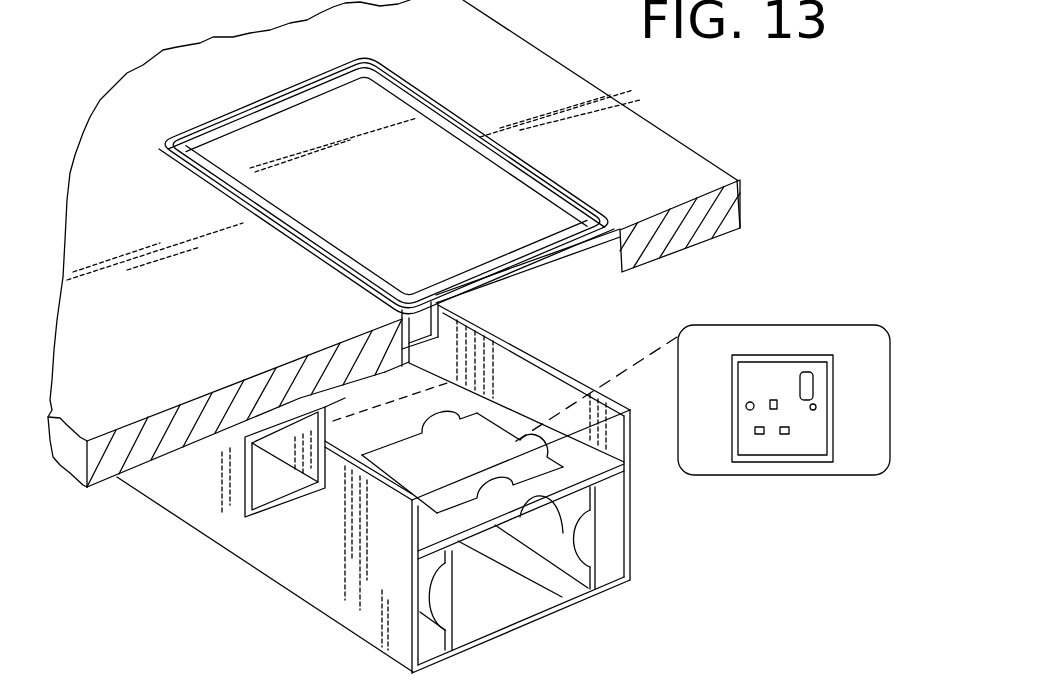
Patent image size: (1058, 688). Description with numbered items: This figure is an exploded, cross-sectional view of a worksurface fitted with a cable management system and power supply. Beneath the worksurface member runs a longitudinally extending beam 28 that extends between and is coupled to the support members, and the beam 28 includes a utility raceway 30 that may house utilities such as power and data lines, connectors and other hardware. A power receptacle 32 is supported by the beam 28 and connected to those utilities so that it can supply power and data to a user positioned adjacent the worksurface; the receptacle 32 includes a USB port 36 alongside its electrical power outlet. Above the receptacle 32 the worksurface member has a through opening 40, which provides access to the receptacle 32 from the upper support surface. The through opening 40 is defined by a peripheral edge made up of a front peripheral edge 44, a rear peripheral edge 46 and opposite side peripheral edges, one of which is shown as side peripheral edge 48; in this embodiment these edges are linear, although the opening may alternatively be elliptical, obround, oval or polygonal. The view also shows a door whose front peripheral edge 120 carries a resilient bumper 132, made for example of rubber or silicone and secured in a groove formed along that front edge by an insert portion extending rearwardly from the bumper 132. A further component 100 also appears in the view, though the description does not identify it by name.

The beam 28 is at (266, 435).
The utility raceway 30 is at (475, 476).
The power receptacle 32 is at (817, 402).
The USB port 36 is at (807, 372).
The through opening 40 is at (504, 278).
The front peripheral edge 44 is at (422, 327).
The rear peripheral edge 46 is at (603, 232).
The side peripheral edge 48 is at (243, 114).
The trim frame 100 is at (408, 194).
The front peripheral edge of the door 120 is at (300, 224).
The resilient bumper 132 is at (386, 200).